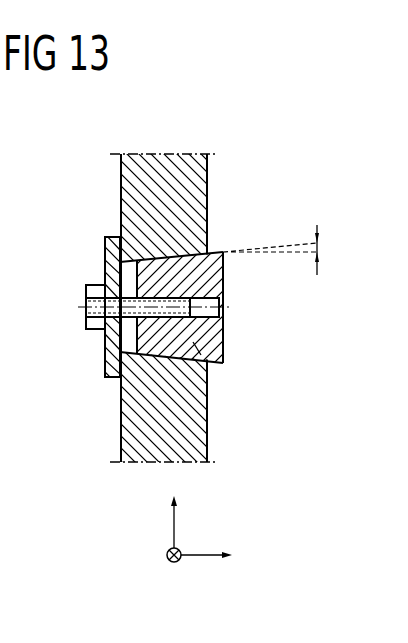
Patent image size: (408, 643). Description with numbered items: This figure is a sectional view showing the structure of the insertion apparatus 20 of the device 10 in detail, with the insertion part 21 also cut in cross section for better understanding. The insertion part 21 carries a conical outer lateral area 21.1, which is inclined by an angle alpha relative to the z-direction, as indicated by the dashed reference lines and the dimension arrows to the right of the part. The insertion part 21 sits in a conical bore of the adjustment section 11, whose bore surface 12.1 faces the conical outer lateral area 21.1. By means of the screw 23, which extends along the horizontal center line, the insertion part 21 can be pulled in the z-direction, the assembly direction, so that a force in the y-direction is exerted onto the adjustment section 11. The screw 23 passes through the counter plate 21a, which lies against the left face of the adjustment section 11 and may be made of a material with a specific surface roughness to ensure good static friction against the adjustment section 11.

The fastening arrangement 10 is at (198, 112).
The adjustment section 11 is at (188, 220).
The conical bore surface 12.1 is at (222, 349).
The insertion apparatus 20 is at (226, 373).
The insertion part 21 is at (222, 326).
The conical outer lateral area 21.1 is at (207, 252).
The counter plate 21a is at (105, 258).
The screw 23 is at (80, 318).